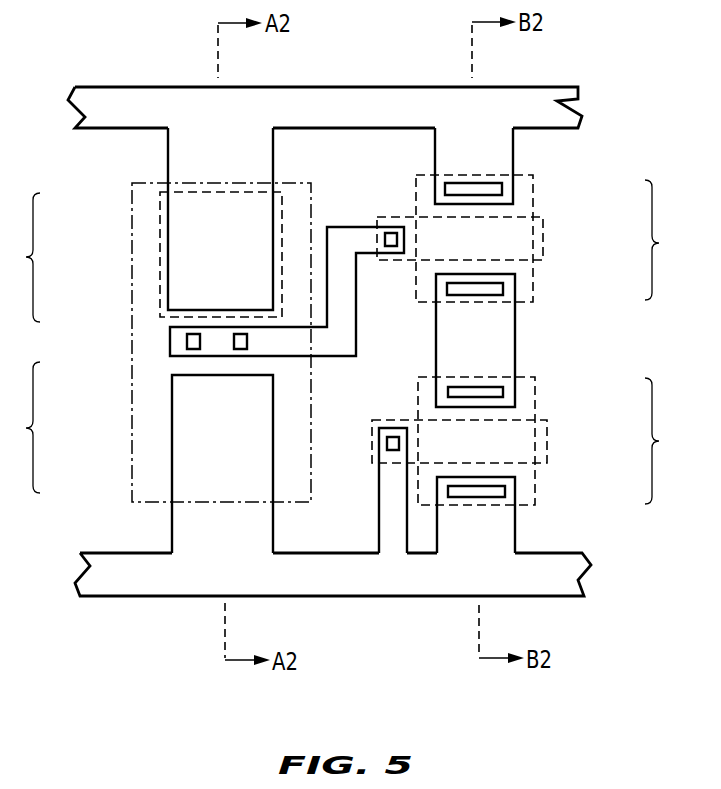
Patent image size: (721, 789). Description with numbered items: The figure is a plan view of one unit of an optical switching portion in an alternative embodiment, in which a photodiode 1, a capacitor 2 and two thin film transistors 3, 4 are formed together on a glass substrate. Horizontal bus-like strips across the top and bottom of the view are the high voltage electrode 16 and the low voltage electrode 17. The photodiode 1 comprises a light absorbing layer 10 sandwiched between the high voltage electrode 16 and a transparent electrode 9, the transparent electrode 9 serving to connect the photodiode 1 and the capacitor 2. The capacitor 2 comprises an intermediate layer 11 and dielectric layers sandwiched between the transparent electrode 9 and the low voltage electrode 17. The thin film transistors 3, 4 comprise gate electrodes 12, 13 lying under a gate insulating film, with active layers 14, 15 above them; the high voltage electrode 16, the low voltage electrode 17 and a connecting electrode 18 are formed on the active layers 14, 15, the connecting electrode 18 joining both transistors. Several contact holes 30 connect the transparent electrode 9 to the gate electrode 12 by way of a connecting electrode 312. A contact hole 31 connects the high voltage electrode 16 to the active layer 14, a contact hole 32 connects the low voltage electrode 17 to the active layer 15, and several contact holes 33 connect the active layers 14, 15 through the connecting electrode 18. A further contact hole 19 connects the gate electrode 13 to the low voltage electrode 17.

The photodiode 1 is at (158, 342).
The capacitor 2 is at (24, 427).
The thin film transistor 3 is at (547, 238).
The thin film transistor 4 is at (550, 441).
The transparent electrode 9 is at (148, 212).
The light absorbing layer 10 is at (168, 265).
The intermediate layer 11 is at (172, 410).
The gate electrode 12 is at (543, 247).
The gate electrode 13 is at (540, 440).
The active layer 14 is at (522, 205).
The active layer 15 is at (525, 487).
The high voltage electrode 16 is at (576, 102).
The low voltage electrode 17 is at (553, 598).
The connecting electrode 18 is at (505, 338).
The contact hole 19 is at (392, 452).
The contact holes 30 is at (190, 342).
The contact hole 31 is at (512, 192).
The contact hole 32 is at (482, 495).
The contact holes 33 is at (495, 287).
The connecting electrode 312 is at (327, 343).